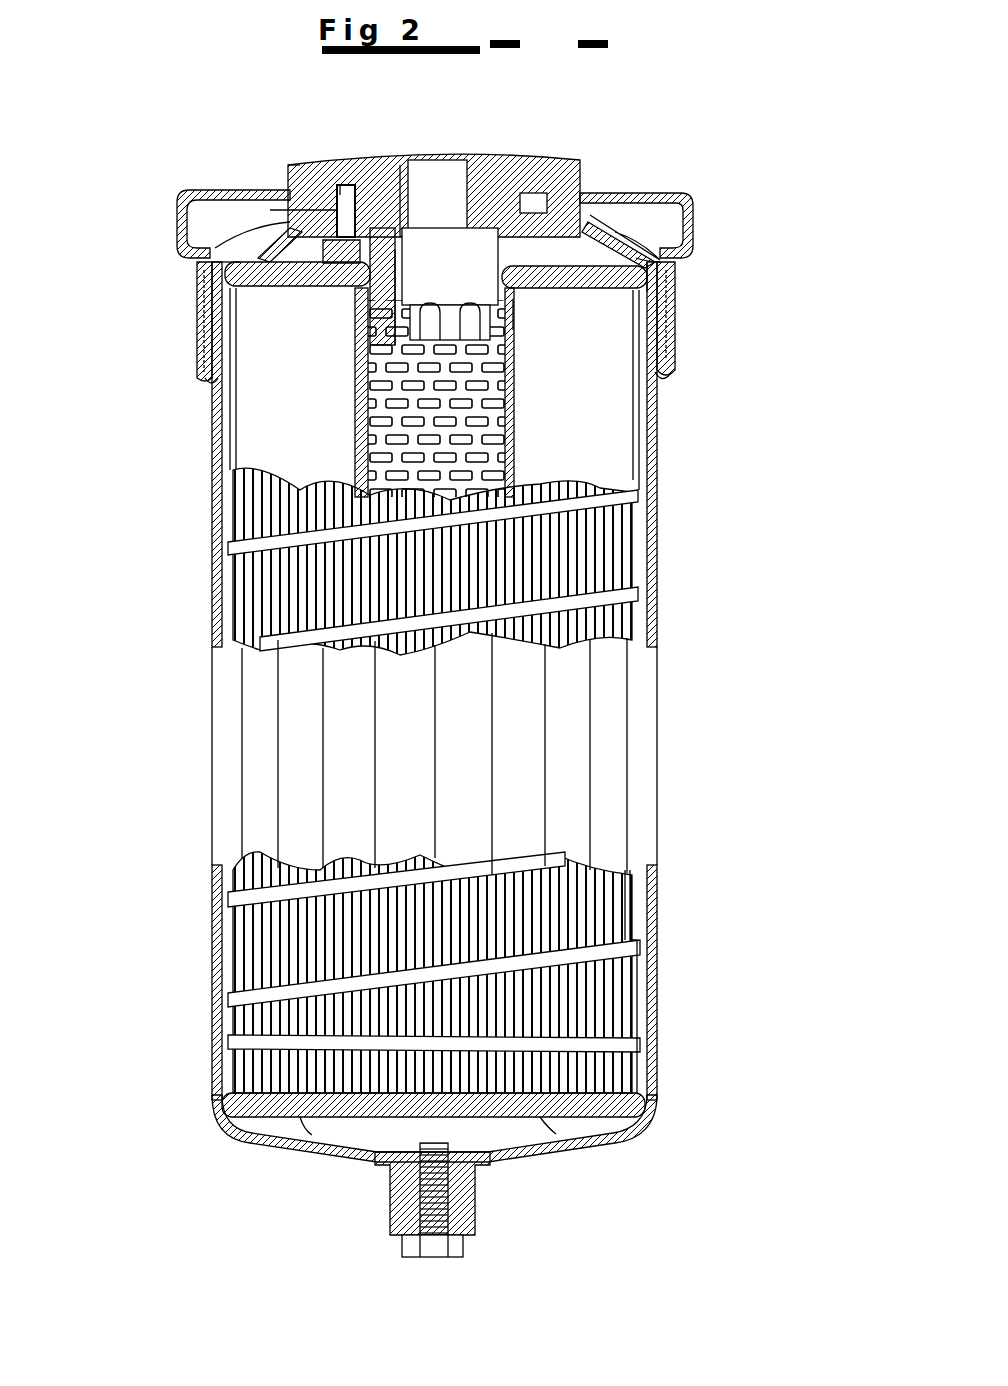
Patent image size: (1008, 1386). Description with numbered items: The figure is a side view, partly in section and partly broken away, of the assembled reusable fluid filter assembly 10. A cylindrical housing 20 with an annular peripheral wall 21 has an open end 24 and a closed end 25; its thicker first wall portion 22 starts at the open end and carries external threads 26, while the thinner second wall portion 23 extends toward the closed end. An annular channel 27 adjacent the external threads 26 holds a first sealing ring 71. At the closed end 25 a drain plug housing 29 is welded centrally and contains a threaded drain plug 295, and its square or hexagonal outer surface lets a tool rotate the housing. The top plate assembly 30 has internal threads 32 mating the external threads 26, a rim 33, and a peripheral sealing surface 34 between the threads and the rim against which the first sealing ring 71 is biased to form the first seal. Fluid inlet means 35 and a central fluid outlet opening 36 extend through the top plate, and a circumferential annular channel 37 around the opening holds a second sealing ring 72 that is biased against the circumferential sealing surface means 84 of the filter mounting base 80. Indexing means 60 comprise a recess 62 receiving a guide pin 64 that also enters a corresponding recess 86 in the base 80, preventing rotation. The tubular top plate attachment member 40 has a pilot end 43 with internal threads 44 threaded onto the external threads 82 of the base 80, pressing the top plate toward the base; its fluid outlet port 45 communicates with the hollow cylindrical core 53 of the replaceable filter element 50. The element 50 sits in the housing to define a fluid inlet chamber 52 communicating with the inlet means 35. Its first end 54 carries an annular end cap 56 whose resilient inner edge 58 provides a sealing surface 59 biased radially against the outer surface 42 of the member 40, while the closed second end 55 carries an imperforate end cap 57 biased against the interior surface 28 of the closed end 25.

The reusable fluid filter assembly 10 is at (714, 102).
The cylindrical housing 20 is at (510, 800).
The annular peripheral wall 21 is at (657, 758).
The first wall portion 22 is at (660, 390).
The second wall portion 23 is at (655, 468).
The open end 24 is at (658, 290).
The closed end 25 is at (553, 1133).
The external threads 26 is at (673, 333).
The annular channel 27 is at (665, 380).
The interior surface 28 is at (620, 1143).
The drain plug housing 29 is at (478, 1210).
The threaded drain plug 295 is at (400, 1243).
The top plate assembly 30 is at (220, 228).
The internal threads 32 is at (200, 308).
The rim 33 is at (204, 372).
The peripheral sealing surface 34 is at (215, 382).
The fluid inlet means 35 is at (562, 160).
The fluid outlet opening 36 is at (440, 218).
The circumferential annular channel 37 is at (620, 255).
The top plate attachment member 40 is at (362, 412).
The outer surface 42 is at (360, 345).
The pilot end 43 is at (430, 258).
The internal threads 44 is at (368, 380).
The fluid outlet port 45 is at (480, 340).
The replaceable filter element 50 is at (553, 553).
The fluid inlet chamber 52 is at (643, 425).
The hollow cylindrical core 53 is at (655, 263).
The first end 54 is at (545, 290).
The closed second end 55 is at (523, 1120).
The annular end cap 56 is at (232, 262).
The imperforate end cap 57 is at (305, 1115).
The resilient inner edge 58 is at (357, 318).
The sealing surface 59 is at (520, 320).
The indexing means 60 is at (353, 128).
The recess 62 is at (262, 222).
The guide pin 64 is at (345, 215).
The first sealing ring 71 is at (678, 353).
The second sealing ring 72 is at (552, 217).
The filter mounting base 80 is at (547, 195).
The external threads 82 is at (405, 165).
The circumferential sealing surface means 84 is at (337, 210).
The recess 86 is at (338, 190).